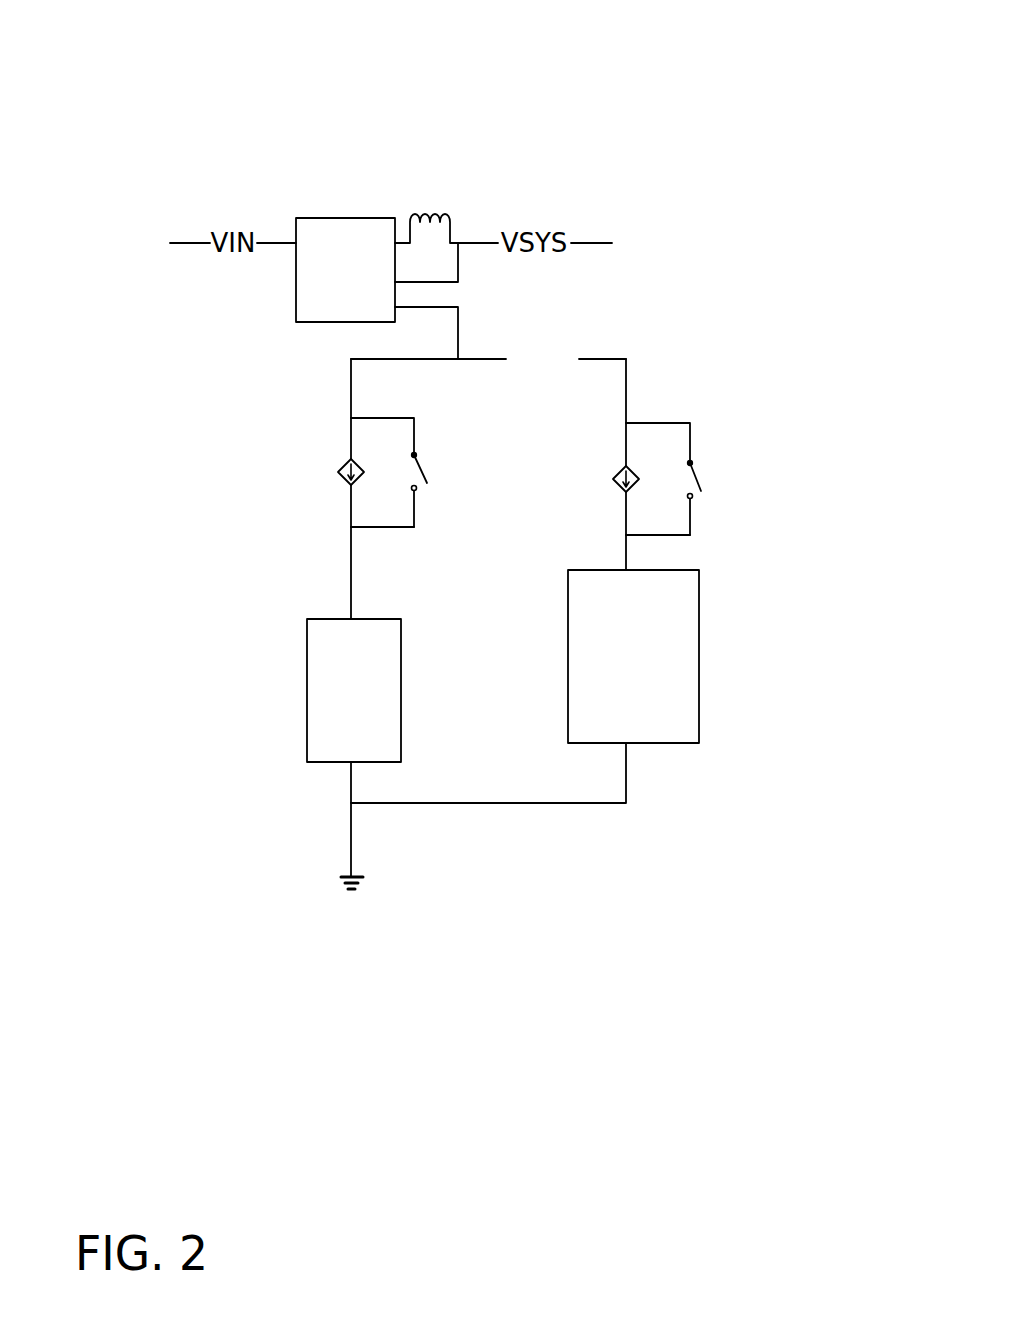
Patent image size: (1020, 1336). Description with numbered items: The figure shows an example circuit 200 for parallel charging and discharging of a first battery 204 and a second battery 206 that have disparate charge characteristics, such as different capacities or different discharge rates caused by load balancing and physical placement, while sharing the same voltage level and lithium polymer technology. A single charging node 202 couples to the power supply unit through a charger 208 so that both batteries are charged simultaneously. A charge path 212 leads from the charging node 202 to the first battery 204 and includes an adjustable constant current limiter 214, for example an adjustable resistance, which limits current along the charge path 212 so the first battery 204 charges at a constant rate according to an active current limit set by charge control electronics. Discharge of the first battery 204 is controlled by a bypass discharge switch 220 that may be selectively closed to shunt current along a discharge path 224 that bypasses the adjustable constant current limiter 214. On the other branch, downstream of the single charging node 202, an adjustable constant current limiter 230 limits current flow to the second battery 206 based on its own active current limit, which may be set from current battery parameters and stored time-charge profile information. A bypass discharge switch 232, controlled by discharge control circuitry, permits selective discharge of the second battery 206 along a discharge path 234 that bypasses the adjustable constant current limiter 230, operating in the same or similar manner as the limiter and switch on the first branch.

The circuit 200 is at (708, 72).
The single charging node 202 is at (458, 359).
The first battery 204 is at (354, 690).
The second battery 206 is at (633, 656).
The charger 208 is at (345, 270).
The charge path 212 is at (350, 427).
The adjustable constant current limiter 214 is at (345, 463).
The bypass discharge switch 220 is at (420, 473).
The discharge path 224 is at (393, 527).
The adjustable constant current limiter 230 is at (620, 469).
The bypass discharge switch 232 is at (697, 482).
The discharge path 234 is at (667, 535).